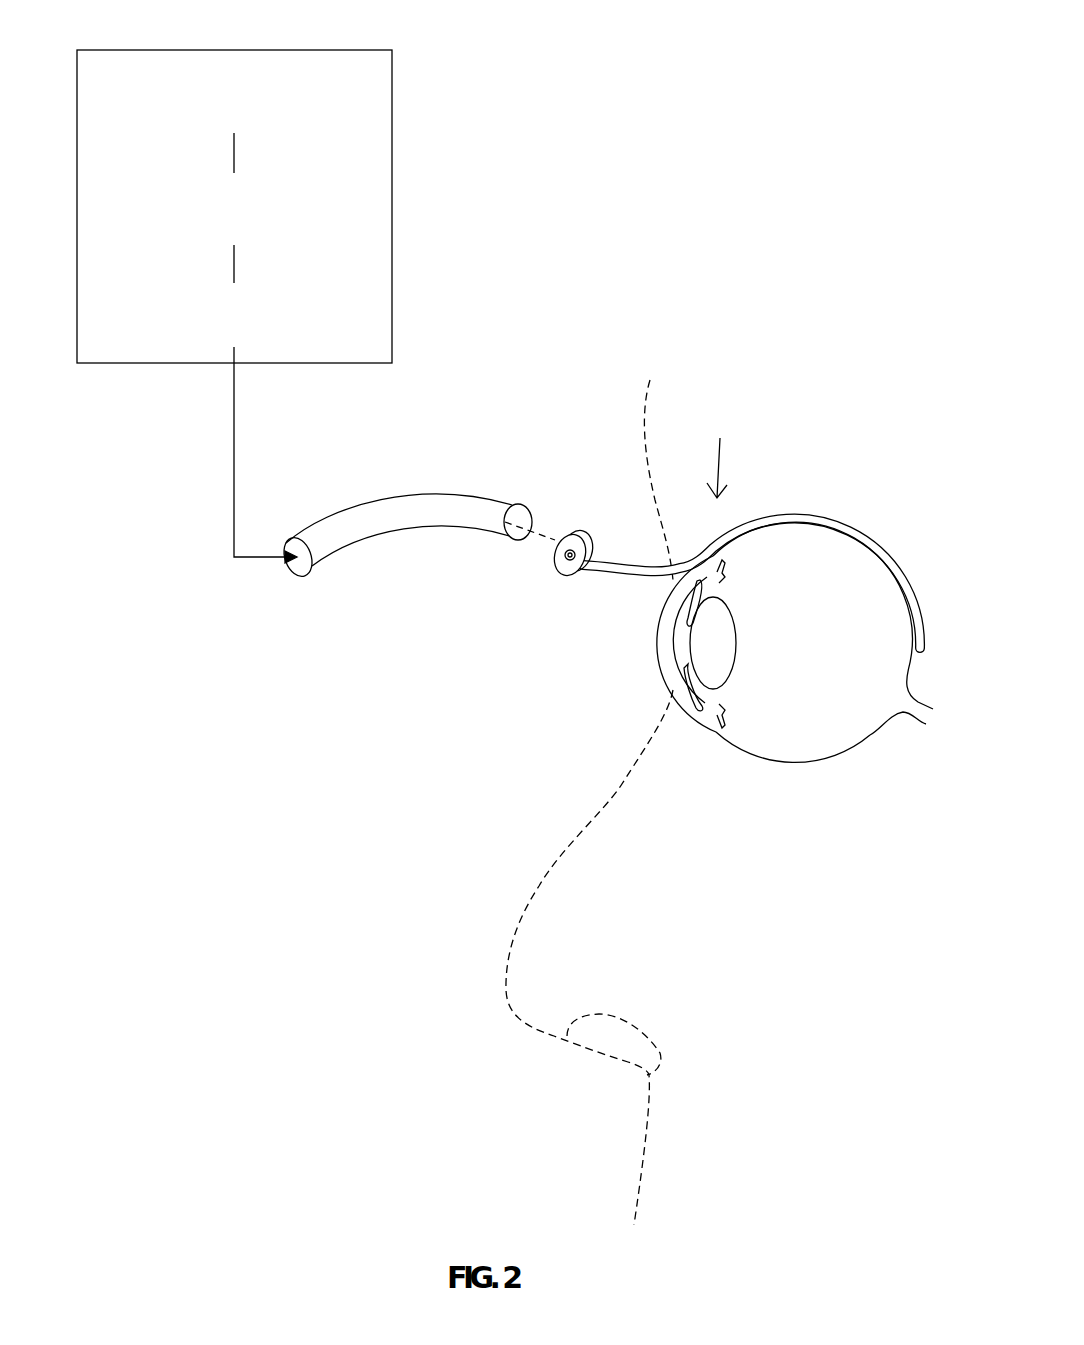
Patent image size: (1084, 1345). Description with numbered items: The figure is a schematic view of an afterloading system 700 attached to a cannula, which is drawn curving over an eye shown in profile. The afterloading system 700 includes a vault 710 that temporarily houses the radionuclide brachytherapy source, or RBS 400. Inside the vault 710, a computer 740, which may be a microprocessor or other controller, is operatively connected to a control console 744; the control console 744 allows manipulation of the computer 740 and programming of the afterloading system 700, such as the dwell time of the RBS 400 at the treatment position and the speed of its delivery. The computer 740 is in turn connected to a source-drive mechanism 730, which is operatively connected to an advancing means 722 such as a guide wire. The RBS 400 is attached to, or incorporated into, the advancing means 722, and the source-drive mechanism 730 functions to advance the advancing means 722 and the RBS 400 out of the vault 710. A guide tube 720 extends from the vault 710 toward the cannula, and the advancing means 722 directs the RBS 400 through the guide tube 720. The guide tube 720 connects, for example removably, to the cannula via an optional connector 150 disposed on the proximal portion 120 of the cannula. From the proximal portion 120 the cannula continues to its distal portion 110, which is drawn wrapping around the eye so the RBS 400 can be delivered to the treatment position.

The afterloading system 700 is at (235, 637).
The vault 710 is at (210, 50).
The computer 740 is at (239, 81).
The control console 744 is at (237, 113).
The source-drive mechanism 730 is at (237, 206).
The radionuclide brachytherapy source (RBS) 400 is at (231, 315).
The advancing means 722 is at (233, 448).
The guide tube 720 is at (412, 498).
The connector 150 is at (562, 573).
The proximal portion of cannula 120 is at (632, 567).
The distal portion of cannula 110 is at (882, 547).